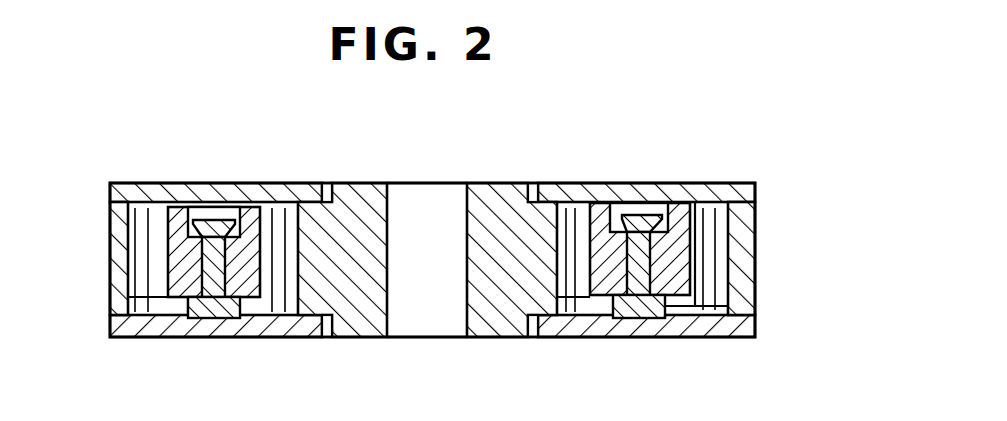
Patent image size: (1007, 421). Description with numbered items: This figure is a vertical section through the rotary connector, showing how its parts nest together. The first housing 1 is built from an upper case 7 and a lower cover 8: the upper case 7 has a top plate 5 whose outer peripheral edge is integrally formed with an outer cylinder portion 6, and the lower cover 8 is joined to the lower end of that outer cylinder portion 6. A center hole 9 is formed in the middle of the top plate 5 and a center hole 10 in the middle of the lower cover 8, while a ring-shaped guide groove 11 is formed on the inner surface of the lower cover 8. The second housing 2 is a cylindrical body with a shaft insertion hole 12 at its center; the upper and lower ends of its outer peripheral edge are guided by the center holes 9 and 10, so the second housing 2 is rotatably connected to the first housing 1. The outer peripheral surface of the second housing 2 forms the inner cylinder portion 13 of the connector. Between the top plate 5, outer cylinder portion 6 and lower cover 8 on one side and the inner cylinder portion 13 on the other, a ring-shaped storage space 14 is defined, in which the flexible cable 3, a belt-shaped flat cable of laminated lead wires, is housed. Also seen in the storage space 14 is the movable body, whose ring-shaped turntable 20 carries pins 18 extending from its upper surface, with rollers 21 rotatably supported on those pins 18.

The first housing 1 is at (822, 247).
The second housing 2 is at (373, 198).
The flexible cable 3 is at (145, 278).
The top plate 5 is at (243, 200).
The outer cylinder portion 6 is at (118, 218).
The upper case 7 is at (747, 265).
The lower cover 8 is at (747, 322).
The center hole 9 is at (530, 192).
The center hole 10 is at (528, 322).
The guide groove 11 is at (648, 322).
The shaft insertion hole 12 is at (435, 195).
The inner cylinder portion 13 is at (300, 262).
The storage space 14 is at (705, 190).
The pins 18 is at (647, 222).
The turntable 20 is at (625, 313).
The rollers 21 is at (183, 213).